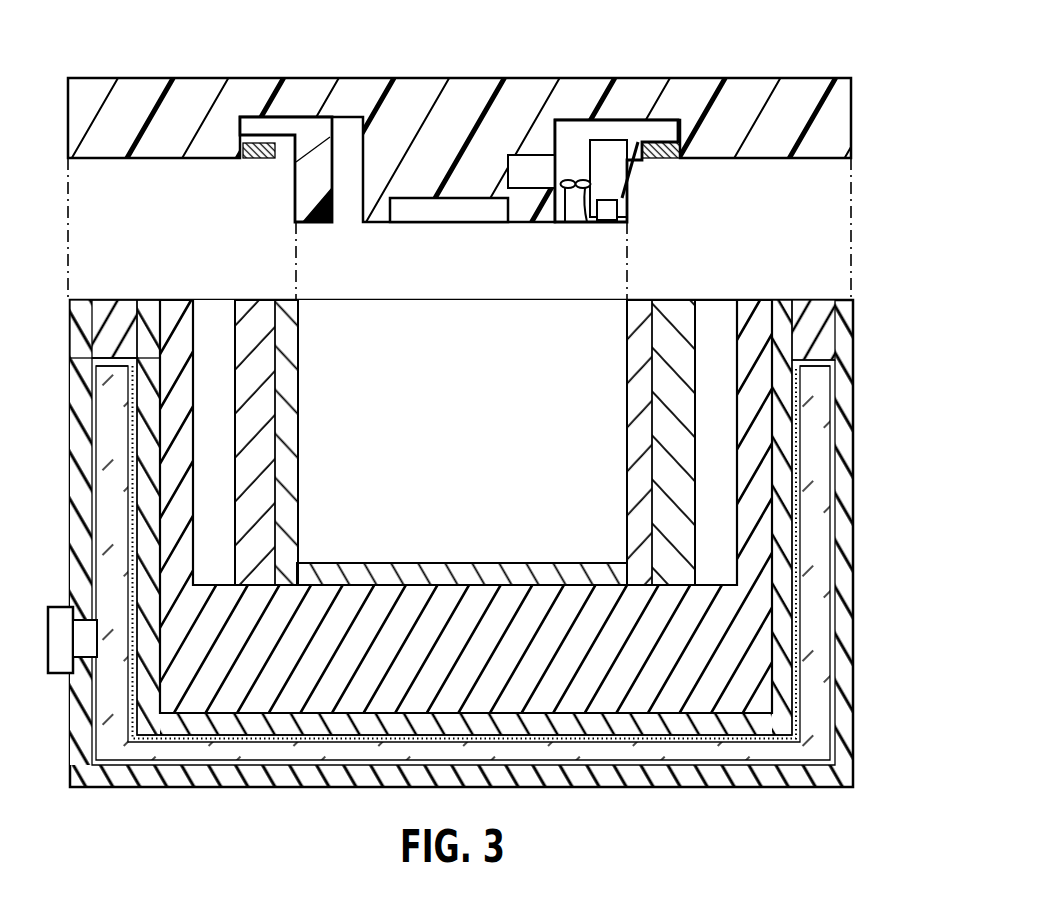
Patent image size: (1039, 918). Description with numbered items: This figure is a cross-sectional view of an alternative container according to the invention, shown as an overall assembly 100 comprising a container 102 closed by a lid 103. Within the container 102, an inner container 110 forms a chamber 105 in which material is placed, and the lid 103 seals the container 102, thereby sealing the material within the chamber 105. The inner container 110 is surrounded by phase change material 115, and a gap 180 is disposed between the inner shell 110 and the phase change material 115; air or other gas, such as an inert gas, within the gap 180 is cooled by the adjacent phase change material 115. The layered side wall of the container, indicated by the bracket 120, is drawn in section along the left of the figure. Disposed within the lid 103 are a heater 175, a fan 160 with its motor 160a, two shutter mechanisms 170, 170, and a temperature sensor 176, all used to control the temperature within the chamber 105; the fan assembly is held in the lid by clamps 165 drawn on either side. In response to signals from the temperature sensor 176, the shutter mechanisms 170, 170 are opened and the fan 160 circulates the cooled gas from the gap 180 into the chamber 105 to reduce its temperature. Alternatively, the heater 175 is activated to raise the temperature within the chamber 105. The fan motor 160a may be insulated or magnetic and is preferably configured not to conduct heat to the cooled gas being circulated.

The heating assembly 100 is at (515, 406).
The container 102 is at (515, 482).
The lid 103 is at (835, 127).
The chamber 105 is at (427, 415).
The inner container 110 is at (287, 484).
The phase change material 115 is at (753, 510).
The layered side wall 120 is at (160, 300).
The fan 160 is at (575, 190).
The fan motor 160a is at (533, 175).
The clamp 165 is at (345, 196).
The shutter mechanism 170 is at (257, 160).
The heater 175 is at (432, 212).
The temperature sensor 176 is at (618, 200).
The gap 180 is at (711, 330).